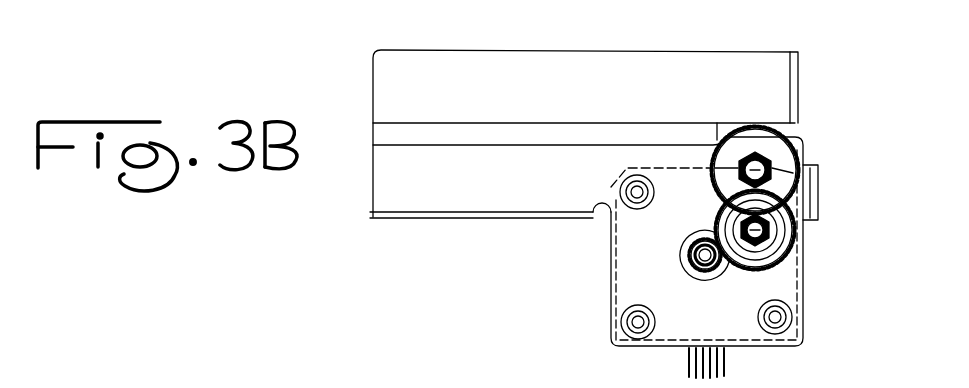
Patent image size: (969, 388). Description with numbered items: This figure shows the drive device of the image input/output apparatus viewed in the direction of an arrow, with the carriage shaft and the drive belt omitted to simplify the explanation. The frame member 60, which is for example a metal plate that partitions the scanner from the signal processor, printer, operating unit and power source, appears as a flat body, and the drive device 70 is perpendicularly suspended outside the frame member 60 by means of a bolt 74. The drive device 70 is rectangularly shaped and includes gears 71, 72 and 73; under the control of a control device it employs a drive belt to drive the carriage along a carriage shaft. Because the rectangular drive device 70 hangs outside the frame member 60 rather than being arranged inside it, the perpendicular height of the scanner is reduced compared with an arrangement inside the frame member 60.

The frame member 60 is at (438, 220).
The drive device 70 is at (800, 290).
The gear 71 is at (688, 261).
The gear 72 is at (780, 232).
The gear 73 is at (796, 153).
The bolt 74 is at (620, 202).